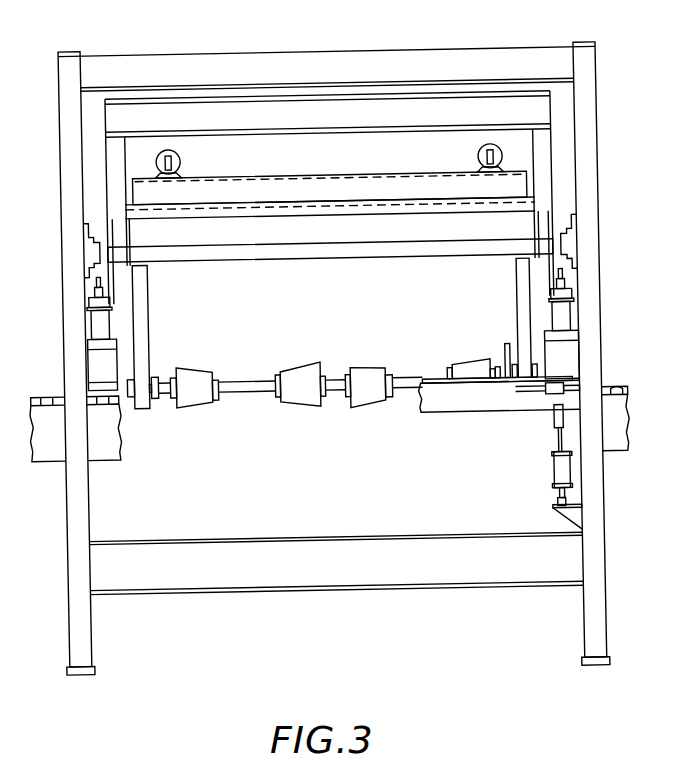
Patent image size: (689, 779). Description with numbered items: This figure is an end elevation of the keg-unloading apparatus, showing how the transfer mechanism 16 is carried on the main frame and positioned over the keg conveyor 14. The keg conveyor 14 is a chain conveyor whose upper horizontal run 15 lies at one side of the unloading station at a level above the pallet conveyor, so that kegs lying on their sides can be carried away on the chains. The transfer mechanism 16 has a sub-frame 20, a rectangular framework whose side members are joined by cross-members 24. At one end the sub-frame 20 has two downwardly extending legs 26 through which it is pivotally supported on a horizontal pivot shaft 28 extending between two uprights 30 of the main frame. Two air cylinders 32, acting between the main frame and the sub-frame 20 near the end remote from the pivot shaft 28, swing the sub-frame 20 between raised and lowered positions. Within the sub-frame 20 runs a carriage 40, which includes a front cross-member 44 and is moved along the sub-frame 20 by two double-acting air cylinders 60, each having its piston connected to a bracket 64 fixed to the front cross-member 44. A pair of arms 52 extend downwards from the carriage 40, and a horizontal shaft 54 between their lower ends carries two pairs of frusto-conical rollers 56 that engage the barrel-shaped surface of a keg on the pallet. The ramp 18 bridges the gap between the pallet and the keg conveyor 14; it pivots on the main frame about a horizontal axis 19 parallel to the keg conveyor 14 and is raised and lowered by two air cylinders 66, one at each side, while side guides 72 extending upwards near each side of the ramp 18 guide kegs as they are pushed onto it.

The keg conveyor 14 is at (55, 438).
The upper horizontal run 15 is at (47, 390).
The transfer mechanism 16 is at (526, 154).
The ramp 18 is at (499, 433).
The horizontal axis 19 is at (567, 402).
The sub-frame 20 is at (205, 112).
The cross-members 24 is at (150, 112).
The legs 26 is at (121, 196).
The pivot shaft 28 is at (459, 258).
The uprights 30 is at (114, 246).
The air cylinders 32 is at (101, 318).
The carriage 40 is at (346, 188).
The front cross-member 44 is at (410, 186).
The arms 52 is at (150, 345).
The horizontal shaft 54 is at (250, 381).
The rollers 56 is at (195, 378).
The double-acting air cylinders 60 is at (161, 160).
The bracket 64 is at (489, 153).
The air cylinders 66 is at (553, 470).
The side guides 72 is at (500, 362).